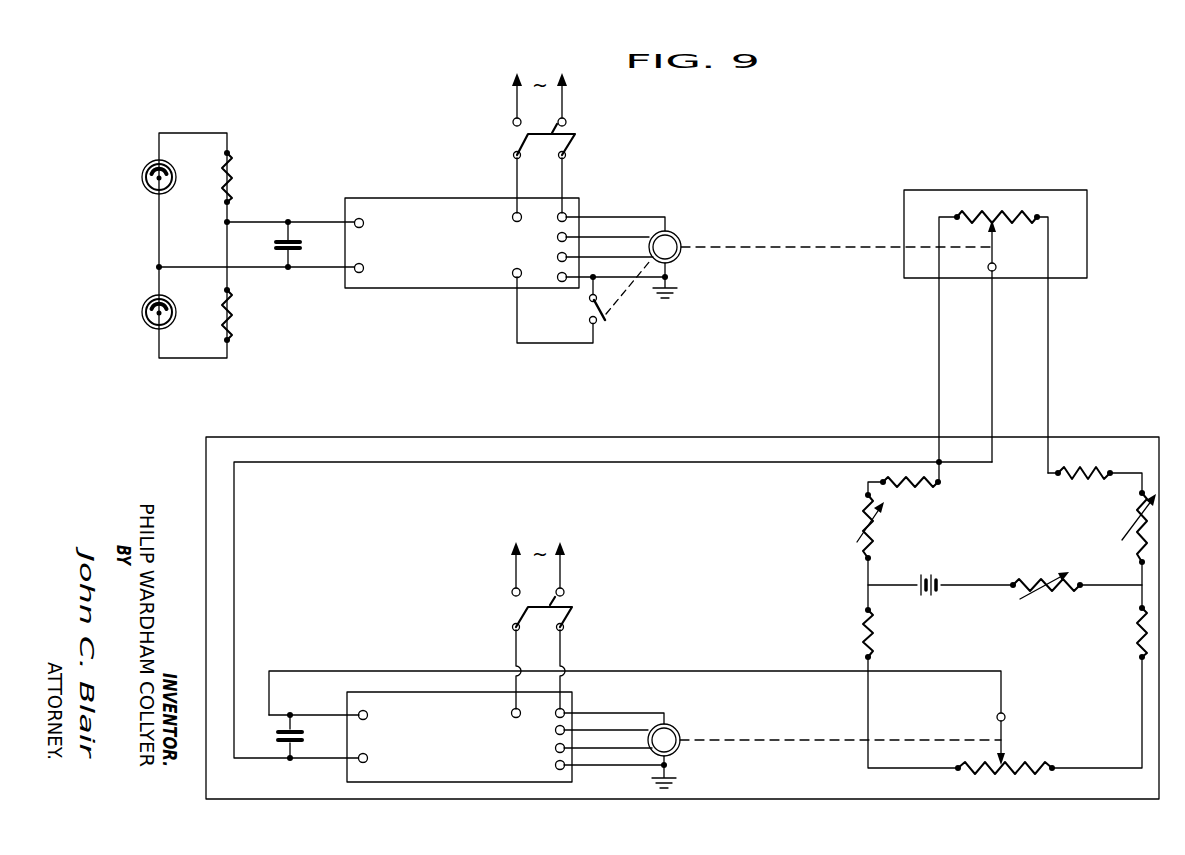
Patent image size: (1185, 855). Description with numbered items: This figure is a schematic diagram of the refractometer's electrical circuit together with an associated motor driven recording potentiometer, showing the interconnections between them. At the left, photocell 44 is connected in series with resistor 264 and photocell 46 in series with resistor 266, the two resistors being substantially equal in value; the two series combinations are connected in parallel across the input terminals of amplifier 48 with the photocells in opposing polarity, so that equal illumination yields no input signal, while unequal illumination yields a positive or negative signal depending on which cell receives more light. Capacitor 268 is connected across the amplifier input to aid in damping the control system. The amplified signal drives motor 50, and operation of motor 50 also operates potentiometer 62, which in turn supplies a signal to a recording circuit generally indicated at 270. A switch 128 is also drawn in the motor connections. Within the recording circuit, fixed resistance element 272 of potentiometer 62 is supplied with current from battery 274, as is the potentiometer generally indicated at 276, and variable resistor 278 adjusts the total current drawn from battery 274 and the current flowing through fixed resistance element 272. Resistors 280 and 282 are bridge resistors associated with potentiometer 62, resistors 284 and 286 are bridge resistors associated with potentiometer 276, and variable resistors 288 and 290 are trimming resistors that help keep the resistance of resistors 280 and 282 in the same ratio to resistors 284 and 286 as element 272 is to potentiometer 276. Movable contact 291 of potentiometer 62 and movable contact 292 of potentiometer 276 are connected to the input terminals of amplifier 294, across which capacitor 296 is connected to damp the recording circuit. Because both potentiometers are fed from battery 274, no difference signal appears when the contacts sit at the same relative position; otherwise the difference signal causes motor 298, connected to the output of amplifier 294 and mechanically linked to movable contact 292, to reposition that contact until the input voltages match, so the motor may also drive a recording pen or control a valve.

The photocell 44 is at (146, 166).
The photocell 46 is at (144, 318).
The amplifier 48 is at (421, 247).
The motor 50 is at (676, 233).
The potentiometer 62 is at (896, 200).
The switch 128 is at (607, 318).
The resistor 264 is at (236, 181).
The resistor 266 is at (236, 322).
The capacitor 268 is at (296, 241).
The recording circuit 270 is at (700, 430).
The fixed resistance element 272 is at (1014, 214).
The battery 274 is at (926, 596).
The potentiometer 276 is at (1046, 761).
The variable resistor 278 is at (1046, 596).
The bridge resistor 280 is at (915, 486).
The bridge resistor 282 is at (1087, 478).
The bridge resistor 284 is at (862, 636).
The bridge resistor 286 is at (1138, 634).
The trimming resistor 288 is at (872, 540).
The trimming resistor 290 is at (1136, 535).
The movable contact 291 is at (996, 258).
The movable contact 292 is at (1006, 736).
The amplifier 294 is at (407, 746).
The capacitor 296 is at (296, 727).
The motor 298 is at (681, 729).